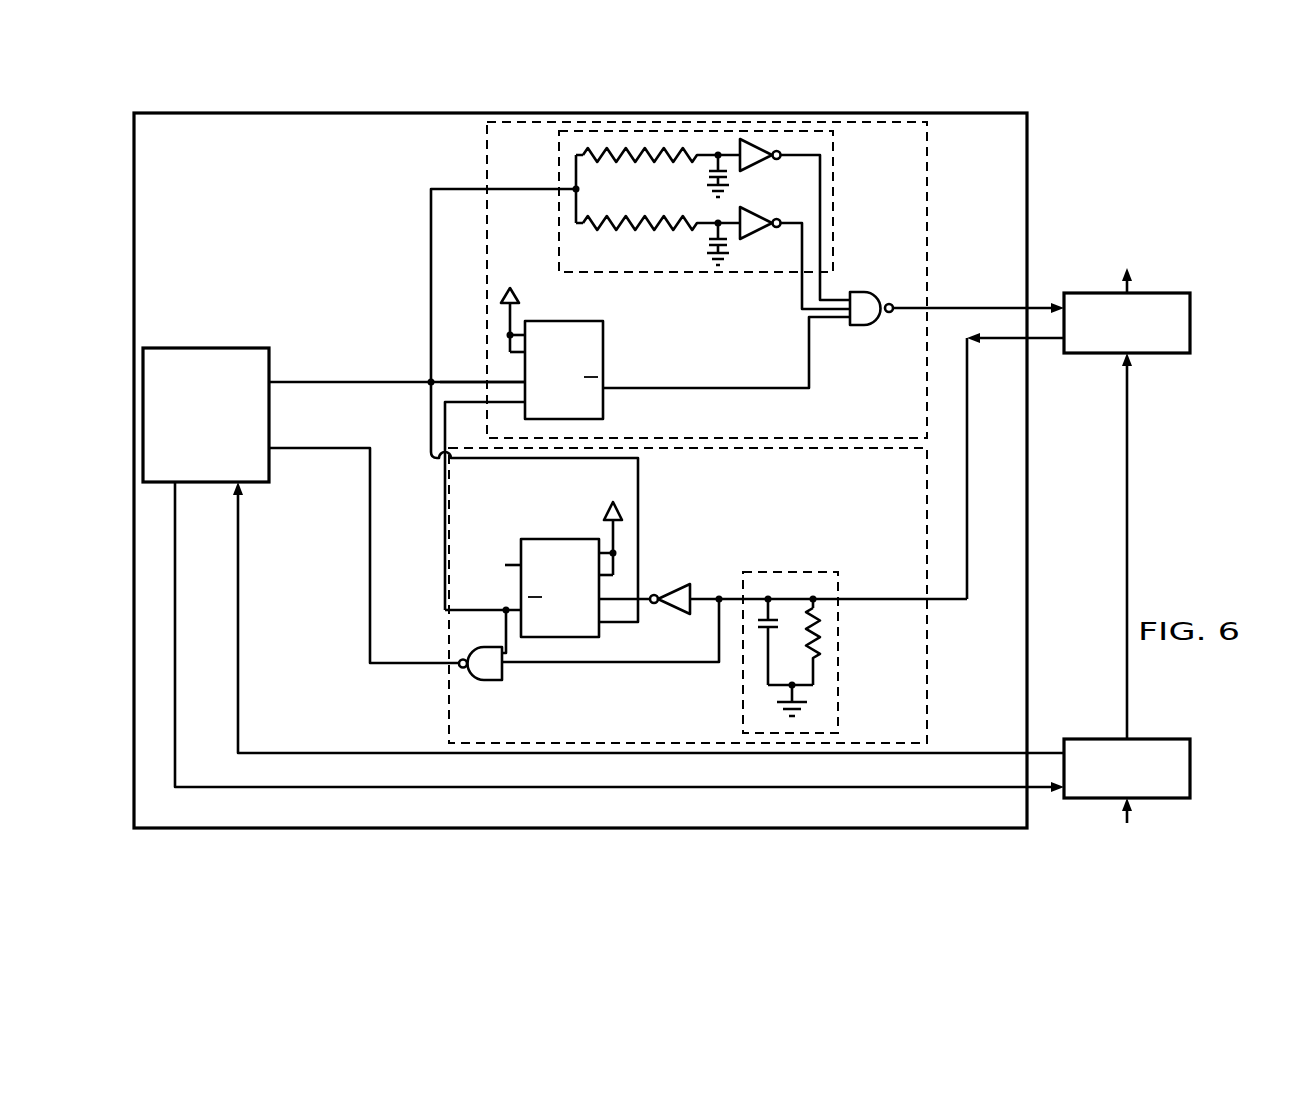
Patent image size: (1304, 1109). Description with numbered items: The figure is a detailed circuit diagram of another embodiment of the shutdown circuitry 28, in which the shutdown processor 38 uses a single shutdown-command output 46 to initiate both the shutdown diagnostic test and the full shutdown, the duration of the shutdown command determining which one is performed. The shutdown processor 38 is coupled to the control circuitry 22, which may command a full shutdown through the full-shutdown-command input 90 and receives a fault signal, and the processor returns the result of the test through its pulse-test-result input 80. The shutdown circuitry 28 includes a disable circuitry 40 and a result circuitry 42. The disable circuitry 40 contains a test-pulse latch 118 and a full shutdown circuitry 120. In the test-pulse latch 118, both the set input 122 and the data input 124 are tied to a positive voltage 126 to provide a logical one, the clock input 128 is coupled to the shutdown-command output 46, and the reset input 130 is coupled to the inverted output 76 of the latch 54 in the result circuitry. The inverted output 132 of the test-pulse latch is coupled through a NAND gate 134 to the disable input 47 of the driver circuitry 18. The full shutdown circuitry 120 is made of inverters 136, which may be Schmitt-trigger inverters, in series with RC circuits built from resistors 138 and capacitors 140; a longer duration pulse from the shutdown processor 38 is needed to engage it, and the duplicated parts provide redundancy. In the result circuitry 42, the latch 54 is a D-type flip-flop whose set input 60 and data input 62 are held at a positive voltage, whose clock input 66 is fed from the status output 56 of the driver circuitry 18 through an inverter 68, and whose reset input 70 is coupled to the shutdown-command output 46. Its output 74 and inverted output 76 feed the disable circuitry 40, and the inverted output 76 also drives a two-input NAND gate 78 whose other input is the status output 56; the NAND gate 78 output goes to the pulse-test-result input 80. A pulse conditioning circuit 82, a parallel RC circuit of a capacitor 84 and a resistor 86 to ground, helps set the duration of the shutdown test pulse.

The driver circuitry 18 is at (1165, 355).
The control circuitry 22 is at (1160, 739).
The shutdown circuitry 28 is at (1027, 195).
The shutdown processor 38 is at (215, 348).
The disable circuitry 40 is at (487, 165).
The result circuitry 42 is at (686, 448).
The shutdown-command output 46 is at (345, 388).
The disable input 47 is at (940, 312).
The latch 54 is at (558, 539).
The status output 56 is at (967, 468).
The set input 60 is at (611, 550).
The data input 62 is at (612, 575).
The clock input 66 is at (642, 602).
The inverter 68 is at (682, 589).
The reset input 70 is at (624, 622).
The output 74 is at (505, 565).
The inverted output 76 is at (487, 610).
The NAND gate 78 is at (497, 647).
The pulse-test-result input 80 is at (320, 450).
The pulse conditioning circuit 82 is at (793, 572).
The capacitor 84 is at (775, 626).
The resistor 86 is at (828, 636).
The full-shutdown-command input 90 is at (240, 622).
The test-pulse latch 118 is at (603, 335).
The full shutdown circuitry 120 is at (833, 197).
The set input 122 is at (515, 332).
The data input 124 is at (510, 348).
The positive voltage 126 is at (522, 287).
The clock input 128 is at (467, 382).
The reset input 130 is at (465, 404).
The inverted output 132 is at (710, 388).
The NAND gate 134 is at (862, 292).
The inverters 136 is at (757, 212).
The resistors 138 is at (690, 214).
The capacitors 140 is at (715, 170).